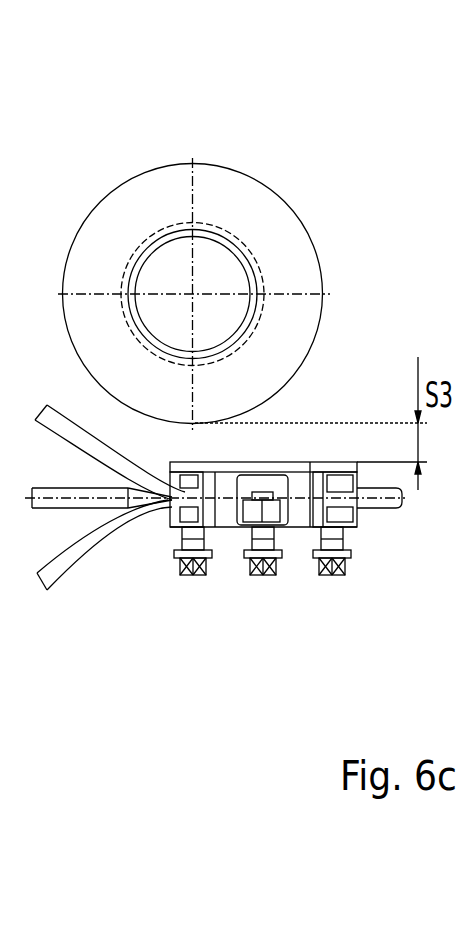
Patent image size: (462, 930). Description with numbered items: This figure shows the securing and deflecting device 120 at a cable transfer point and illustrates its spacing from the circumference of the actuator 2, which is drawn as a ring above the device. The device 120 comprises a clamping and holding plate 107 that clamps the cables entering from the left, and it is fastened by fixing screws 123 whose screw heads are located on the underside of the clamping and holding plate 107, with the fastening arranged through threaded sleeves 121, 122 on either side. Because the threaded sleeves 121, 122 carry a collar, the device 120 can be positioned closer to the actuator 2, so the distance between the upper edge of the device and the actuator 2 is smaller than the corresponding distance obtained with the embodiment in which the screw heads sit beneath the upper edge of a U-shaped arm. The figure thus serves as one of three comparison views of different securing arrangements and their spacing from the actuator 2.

The actuator 2 is at (235, 208).
The clamping and holding plate 107 is at (353, 527).
The securing and deflecting device 120 is at (233, 550).
The threaded sleeve 121 is at (170, 460).
The threaded sleeve 122 is at (327, 460).
The fixing screws 123 is at (176, 555).